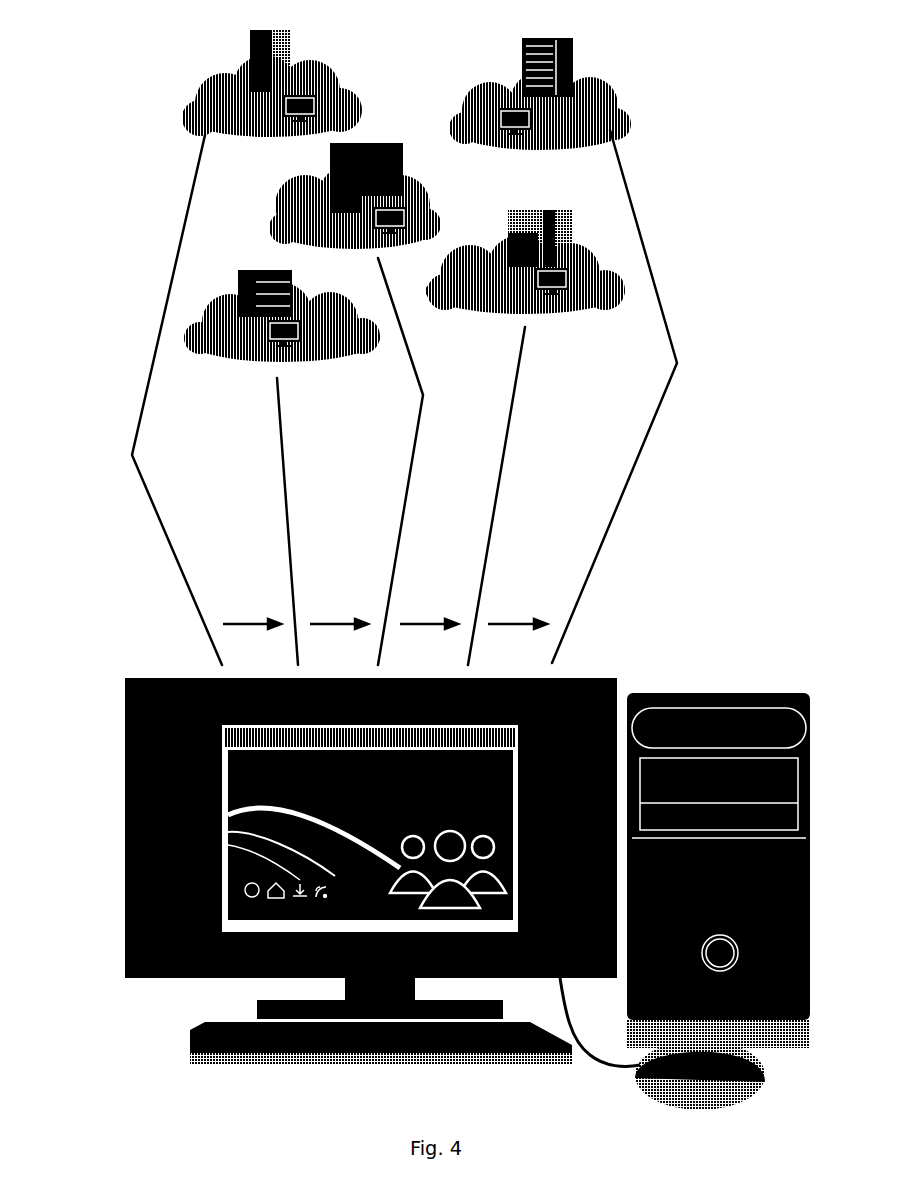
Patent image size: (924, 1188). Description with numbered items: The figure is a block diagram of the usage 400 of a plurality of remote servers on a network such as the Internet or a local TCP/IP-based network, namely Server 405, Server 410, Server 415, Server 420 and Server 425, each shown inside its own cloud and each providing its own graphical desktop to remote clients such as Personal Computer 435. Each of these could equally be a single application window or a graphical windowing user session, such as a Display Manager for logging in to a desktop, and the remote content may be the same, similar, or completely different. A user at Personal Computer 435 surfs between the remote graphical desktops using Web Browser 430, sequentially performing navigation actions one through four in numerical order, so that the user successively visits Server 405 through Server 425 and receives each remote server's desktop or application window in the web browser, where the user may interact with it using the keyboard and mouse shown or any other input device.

The usage 400 is at (411, 570).
The server 405 is at (247, 83).
The server 410 is at (568, 94).
The server 415 is at (388, 196).
The server 420 is at (525, 251).
The server 425 is at (282, 304).
The web browser 430 is at (265, 894).
The personal computer 435 is at (467, 867).